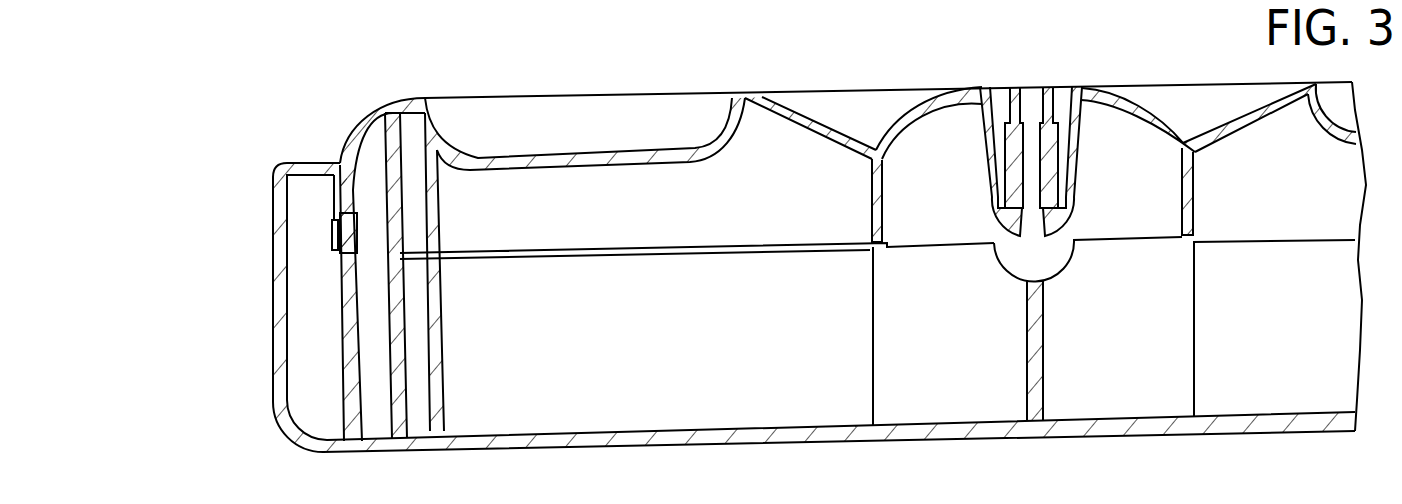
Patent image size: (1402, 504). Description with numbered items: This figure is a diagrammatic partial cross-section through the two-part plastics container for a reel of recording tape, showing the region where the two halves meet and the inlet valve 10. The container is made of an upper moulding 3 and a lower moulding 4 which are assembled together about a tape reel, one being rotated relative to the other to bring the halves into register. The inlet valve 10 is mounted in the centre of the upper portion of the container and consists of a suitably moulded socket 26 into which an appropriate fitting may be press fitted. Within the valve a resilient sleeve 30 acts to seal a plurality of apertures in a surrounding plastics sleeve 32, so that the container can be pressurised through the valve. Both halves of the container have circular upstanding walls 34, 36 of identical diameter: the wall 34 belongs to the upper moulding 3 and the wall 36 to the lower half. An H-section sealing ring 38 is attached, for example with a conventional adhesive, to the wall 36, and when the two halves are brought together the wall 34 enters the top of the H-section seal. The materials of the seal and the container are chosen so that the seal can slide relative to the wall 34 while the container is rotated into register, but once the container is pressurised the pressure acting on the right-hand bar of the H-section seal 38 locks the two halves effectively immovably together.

The upper moulding 3 is at (657, 160).
The lower moulding 4 is at (630, 427).
The inlet valve 10 is at (1068, 72).
The socket 26 is at (985, 135).
The resilient sleeve 30 is at (1000, 165).
The plastics sleeve 32 is at (991, 170).
The circular upstanding wall 34 is at (340, 193).
The circular upstanding wall 36 is at (347, 348).
The H-section sealing ring 38 is at (332, 240).